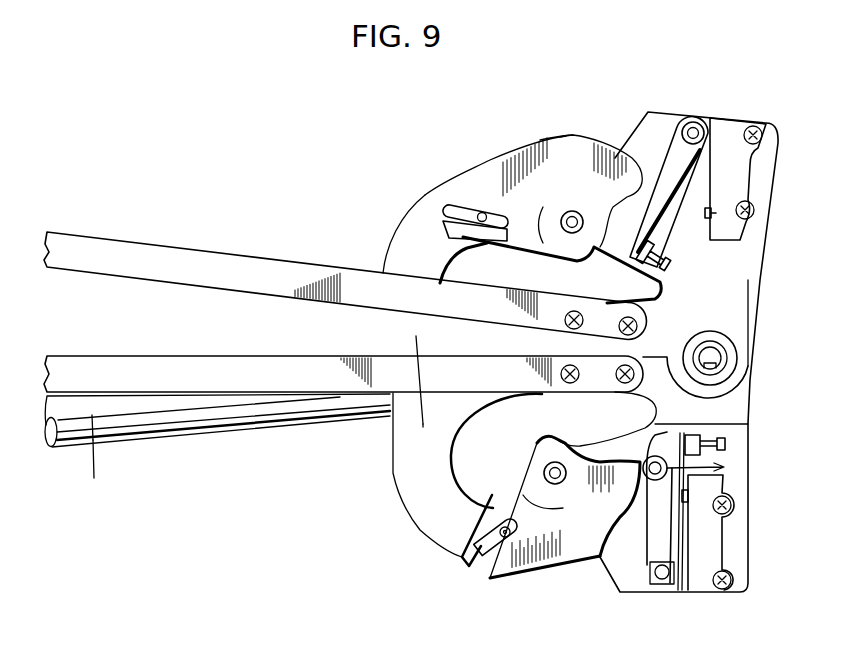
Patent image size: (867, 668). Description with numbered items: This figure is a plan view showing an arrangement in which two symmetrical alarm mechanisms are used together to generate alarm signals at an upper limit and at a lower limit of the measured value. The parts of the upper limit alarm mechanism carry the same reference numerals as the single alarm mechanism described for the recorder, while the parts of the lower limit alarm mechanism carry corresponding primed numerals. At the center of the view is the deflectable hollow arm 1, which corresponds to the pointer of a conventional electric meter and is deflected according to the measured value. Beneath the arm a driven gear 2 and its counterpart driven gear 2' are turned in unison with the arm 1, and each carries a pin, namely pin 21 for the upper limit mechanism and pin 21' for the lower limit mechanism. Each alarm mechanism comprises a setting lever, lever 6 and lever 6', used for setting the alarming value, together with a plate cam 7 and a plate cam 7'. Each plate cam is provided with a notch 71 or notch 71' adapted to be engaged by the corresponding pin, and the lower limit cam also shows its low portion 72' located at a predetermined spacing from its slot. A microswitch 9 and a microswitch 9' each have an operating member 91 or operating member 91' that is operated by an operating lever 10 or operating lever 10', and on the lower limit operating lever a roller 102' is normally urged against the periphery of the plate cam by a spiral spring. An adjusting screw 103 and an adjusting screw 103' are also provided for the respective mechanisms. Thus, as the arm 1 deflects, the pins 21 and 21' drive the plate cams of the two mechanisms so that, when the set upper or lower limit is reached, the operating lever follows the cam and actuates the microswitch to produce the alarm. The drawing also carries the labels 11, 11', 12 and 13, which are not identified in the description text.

The arm 1 is at (187, 432).
The driven gear 2 is at (512, 474).
The driven gear 2' is at (426, 239).
The lever 6 is at (343, 393).
The lever 6' is at (345, 278).
The plate cam 7 is at (564, 507).
The plate cam 7' is at (543, 219).
The microswitch 9 is at (730, 532).
The microswitch 9' is at (755, 179).
The operating lever 10 is at (648, 511).
The operating lever 10' is at (657, 188).
The slot 11 is at (252, 464).
The slot 11' is at (246, 377).
The pivot pin 12 is at (572, 508).
The direction of movement 13 is at (711, 465).
The pin 21 is at (486, 533).
The pin 21' is at (471, 195).
The notch 71 is at (464, 545).
The notch 71' is at (452, 210).
The low portion 72' is at (542, 134).
The operating member 91 is at (736, 485).
The operating member 91' is at (696, 216).
The roller 102' is at (520, 116).
The adjusting screw 103 is at (743, 441).
The adjusting screw 103' is at (682, 262).